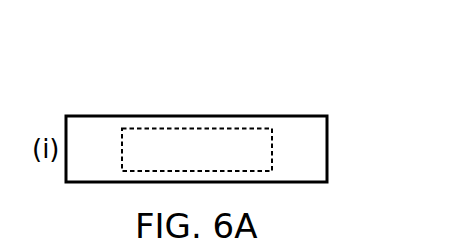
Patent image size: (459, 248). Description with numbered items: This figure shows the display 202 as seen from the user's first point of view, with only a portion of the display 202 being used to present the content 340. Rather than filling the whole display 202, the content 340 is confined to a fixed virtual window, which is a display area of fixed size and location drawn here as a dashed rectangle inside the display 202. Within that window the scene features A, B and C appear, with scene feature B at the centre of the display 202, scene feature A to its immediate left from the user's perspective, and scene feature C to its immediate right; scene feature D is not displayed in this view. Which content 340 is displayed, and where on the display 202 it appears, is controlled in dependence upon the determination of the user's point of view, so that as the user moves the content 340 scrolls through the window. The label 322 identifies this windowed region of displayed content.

The display 202 is at (78, 115).
The content region 322 is at (167, 128).
The content 340 is at (215, 112).